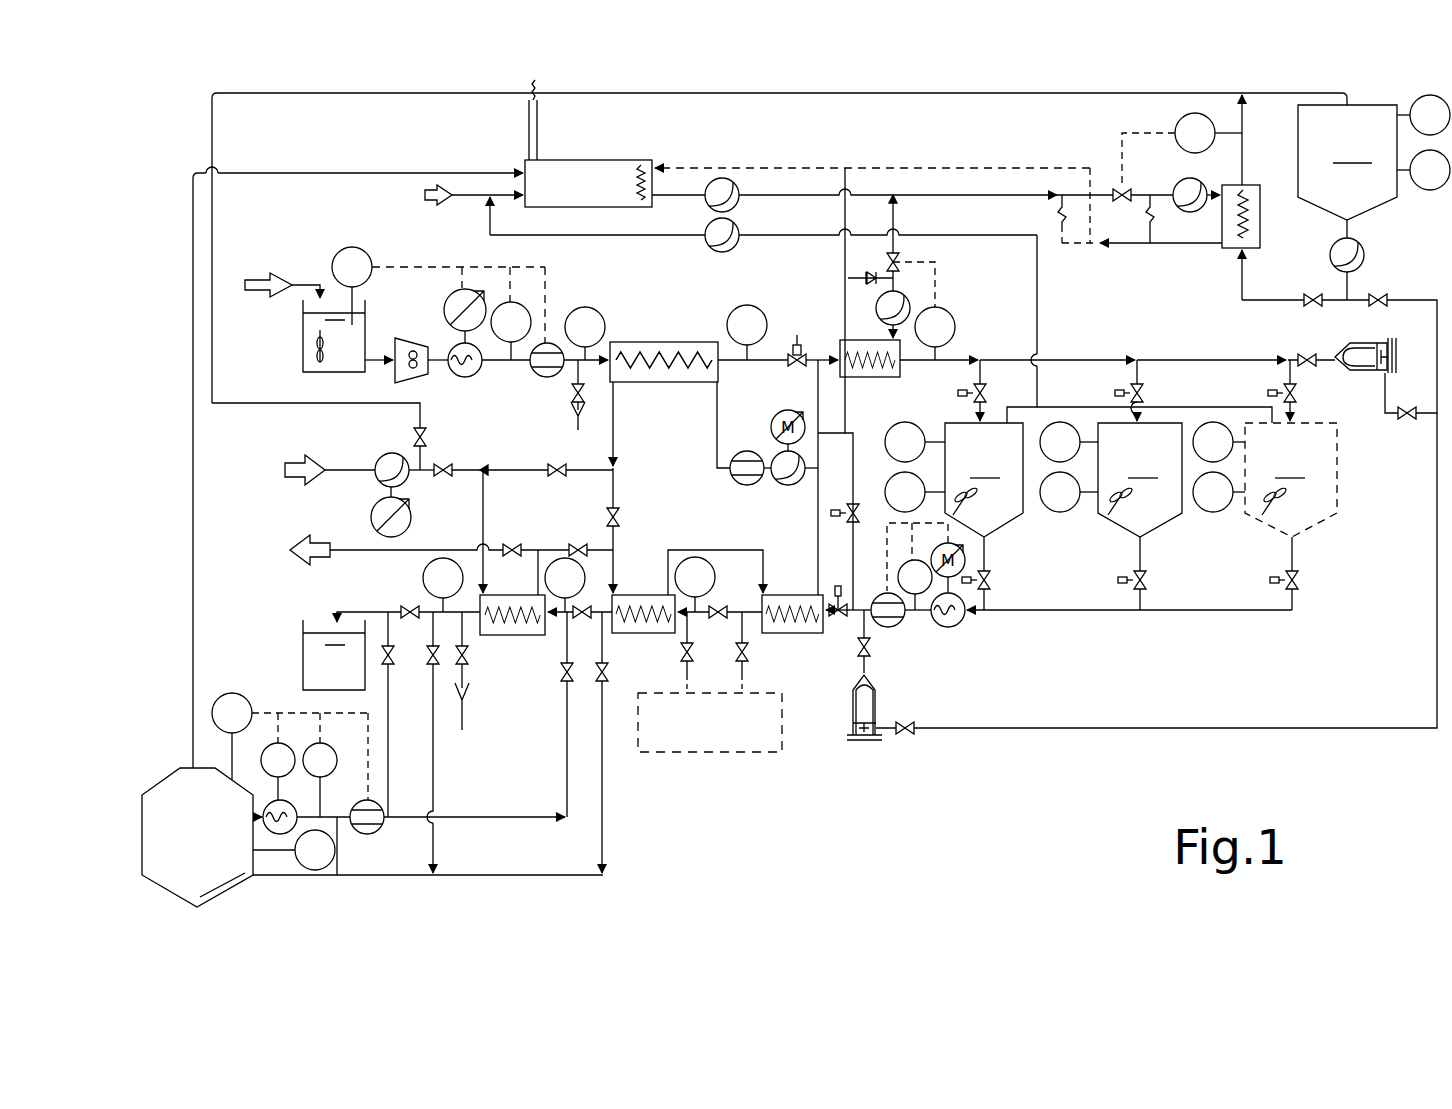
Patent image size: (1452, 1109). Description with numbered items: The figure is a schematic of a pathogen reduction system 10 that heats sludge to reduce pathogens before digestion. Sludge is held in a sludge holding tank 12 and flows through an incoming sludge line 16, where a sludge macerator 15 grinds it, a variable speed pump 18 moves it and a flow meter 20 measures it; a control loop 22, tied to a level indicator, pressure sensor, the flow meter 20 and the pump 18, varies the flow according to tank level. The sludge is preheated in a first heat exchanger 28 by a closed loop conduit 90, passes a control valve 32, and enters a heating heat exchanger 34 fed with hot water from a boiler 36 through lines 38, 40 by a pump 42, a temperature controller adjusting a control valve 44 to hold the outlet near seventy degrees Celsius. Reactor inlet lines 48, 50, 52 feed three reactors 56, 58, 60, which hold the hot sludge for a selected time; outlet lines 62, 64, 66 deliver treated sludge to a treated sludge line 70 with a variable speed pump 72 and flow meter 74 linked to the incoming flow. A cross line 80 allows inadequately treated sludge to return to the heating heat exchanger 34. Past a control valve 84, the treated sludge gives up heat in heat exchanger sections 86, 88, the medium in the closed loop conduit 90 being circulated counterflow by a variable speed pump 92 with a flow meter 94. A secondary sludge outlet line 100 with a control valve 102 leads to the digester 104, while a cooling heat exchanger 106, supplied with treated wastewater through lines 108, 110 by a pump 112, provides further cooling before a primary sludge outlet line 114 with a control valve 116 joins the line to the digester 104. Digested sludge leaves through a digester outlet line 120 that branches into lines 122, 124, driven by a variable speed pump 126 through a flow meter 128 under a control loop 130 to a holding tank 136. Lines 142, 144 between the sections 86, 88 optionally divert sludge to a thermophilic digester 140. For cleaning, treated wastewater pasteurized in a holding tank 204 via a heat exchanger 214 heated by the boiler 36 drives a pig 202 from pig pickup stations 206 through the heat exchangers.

The pathogen reduction system 10 is at (814, 793).
The sludge holding tank 12 is at (303, 370).
The sludge macerator 15 is at (420, 380).
The incoming sludge line 16 is at (381, 356).
The variable speed pump 18 is at (475, 376).
The flow meter 20 is at (545, 378).
The control loop 22 is at (556, 282).
The first heat exchanger 28 is at (670, 320).
The control valve 32 is at (797, 335).
The heating heat exchanger 34 is at (886, 384).
The boiler 36 is at (600, 157).
The hot water line 38 is at (845, 258).
The hot water line 40 is at (896, 210).
The pump 42 is at (912, 300).
The control valve 44 is at (899, 252).
The reactor inlet line 48 is at (982, 364).
The reactor inlet line 50 is at (1140, 365).
The reactor inlet line 52 is at (1290, 372).
The reactor 56 is at (954, 479).
The reactor 58 is at (1111, 479).
The reactor 60 is at (1265, 479).
The outlet line 62 is at (1000, 556).
The outlet line 64 is at (1158, 558).
The outlet line 66 is at (1308, 558).
The treated sludge line 70 is at (1073, 610).
The variable speed pump 72 is at (955, 627).
The flow meter 74 is at (893, 627).
The cross line 80 is at (852, 432).
The control valve 84 is at (838, 616).
The heat exchanger section 86 is at (790, 590).
The heat exchanger section 88 is at (645, 590).
The closed loop conduit 90 is at (715, 417).
The variable speed pump 92 is at (790, 486).
The flow meter 94 is at (745, 450).
The secondary sludge outlet line 100 is at (603, 780).
The control valve 102 is at (606, 673).
The digester 104 is at (233, 885).
The cooling heat exchanger 106 is at (512, 641).
The line 108 is at (485, 516).
The line 110 is at (410, 548).
The pump 112 is at (375, 481).
The primary sludge outlet line 114 is at (435, 783).
The control valve 116 is at (430, 652).
The digester outlet line 120 is at (338, 822).
The line 122 is at (392, 743).
The line 124 is at (495, 820).
The variable speed pump 126 is at (279, 835).
The flow meter 128 is at (371, 835).
The control loop 130 is at (298, 700).
The holding tank 136 is at (303, 657).
The thermophilic digester 140 is at (703, 752).
The line 142 is at (690, 630).
The line 144 is at (744, 630).
The pig 202 is at (1367, 362).
The holding tank 204 is at (1163, 414).
The pig pickup station 206 is at (1366, 336).
The heat exchanger 214 is at (1219, 252).